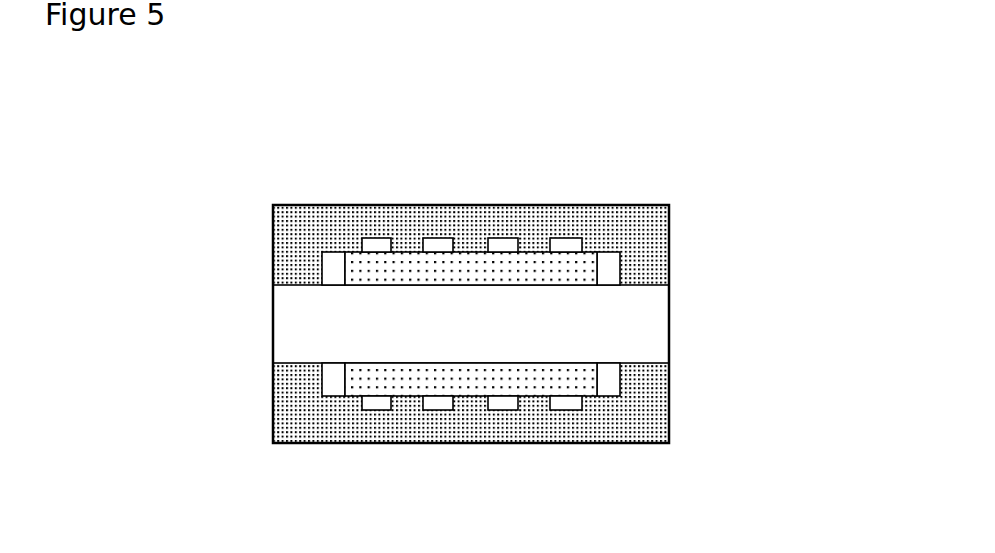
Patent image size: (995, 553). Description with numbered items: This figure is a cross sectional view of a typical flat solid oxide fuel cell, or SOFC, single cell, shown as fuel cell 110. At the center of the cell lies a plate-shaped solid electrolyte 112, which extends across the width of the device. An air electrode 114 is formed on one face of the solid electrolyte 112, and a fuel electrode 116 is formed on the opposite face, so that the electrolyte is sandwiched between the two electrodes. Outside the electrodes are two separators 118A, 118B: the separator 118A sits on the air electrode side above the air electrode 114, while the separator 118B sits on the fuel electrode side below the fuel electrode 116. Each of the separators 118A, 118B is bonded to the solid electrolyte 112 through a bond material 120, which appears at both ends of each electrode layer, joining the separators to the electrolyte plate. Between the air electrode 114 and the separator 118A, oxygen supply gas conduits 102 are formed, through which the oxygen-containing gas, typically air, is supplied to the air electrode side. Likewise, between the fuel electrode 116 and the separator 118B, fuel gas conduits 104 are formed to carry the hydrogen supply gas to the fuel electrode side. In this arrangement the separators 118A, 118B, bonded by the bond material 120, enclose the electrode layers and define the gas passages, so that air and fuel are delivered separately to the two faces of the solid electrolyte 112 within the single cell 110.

The fuel cell 110 is at (832, 119).
The oxygen supply gas conduits 102 is at (435, 238).
The fuel gas conduits 104 is at (503, 410).
The solid electrolyte 112 is at (628, 332).
The air electrode 114 is at (373, 278).
The fuel electrode 116 is at (378, 365).
The separator 118A is at (513, 205).
The separator 118B is at (615, 443).
The bond material 120 is at (273, 283).